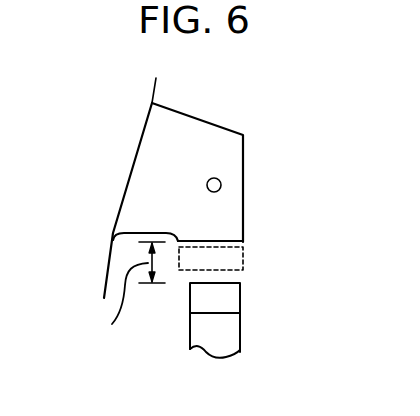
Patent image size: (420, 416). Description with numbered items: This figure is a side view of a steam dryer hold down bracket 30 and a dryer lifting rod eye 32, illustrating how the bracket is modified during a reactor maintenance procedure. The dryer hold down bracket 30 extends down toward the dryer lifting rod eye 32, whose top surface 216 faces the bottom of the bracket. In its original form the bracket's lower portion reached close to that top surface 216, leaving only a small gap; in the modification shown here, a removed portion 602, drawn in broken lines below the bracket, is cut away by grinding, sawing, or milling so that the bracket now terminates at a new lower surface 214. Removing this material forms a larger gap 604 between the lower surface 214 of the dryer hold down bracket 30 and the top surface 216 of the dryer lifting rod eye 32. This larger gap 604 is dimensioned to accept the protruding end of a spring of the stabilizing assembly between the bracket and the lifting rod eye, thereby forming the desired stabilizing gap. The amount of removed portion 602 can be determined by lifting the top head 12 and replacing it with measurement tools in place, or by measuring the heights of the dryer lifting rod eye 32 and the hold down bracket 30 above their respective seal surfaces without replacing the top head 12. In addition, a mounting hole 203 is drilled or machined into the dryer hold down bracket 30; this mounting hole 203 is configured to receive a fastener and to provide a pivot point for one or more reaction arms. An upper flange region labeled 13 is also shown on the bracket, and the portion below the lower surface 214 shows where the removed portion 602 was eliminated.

The top head 12 is at (111, 257).
The flange 13 is at (156, 80).
The dryer hold down bracket 30 is at (223, 127).
The mounting hole 203 is at (221, 185).
The lower surface 214 is at (243, 240).
The removed portion 602 is at (243, 259).
The larger gap 604 is at (112, 324).
The top surface 216 is at (240, 290).
The dryer lifting rod eye 32 is at (240, 333).